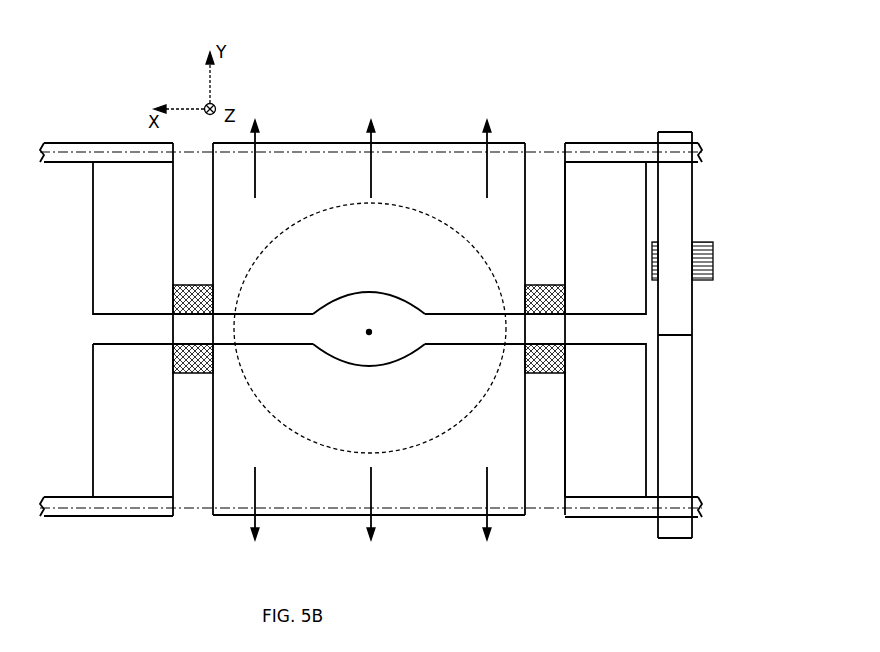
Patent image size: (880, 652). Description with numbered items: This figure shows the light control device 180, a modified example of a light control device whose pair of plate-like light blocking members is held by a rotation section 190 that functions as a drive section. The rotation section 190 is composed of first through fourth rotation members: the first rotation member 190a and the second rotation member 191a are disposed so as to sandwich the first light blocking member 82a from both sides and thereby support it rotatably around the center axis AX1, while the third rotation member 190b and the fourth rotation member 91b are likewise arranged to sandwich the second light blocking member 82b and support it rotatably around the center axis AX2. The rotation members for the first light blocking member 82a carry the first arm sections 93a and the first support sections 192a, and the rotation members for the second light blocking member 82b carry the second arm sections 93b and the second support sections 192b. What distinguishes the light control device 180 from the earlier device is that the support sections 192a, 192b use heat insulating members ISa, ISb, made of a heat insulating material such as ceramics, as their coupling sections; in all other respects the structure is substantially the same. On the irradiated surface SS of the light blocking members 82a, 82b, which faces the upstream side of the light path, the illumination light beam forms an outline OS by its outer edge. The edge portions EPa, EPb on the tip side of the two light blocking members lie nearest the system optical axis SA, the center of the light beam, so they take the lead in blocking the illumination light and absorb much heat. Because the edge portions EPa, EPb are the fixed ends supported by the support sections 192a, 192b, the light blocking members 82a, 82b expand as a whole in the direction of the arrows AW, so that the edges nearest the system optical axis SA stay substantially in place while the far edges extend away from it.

The first rotation member 190a is at (121, 133).
The third rotation member 190b is at (113, 527).
The rotation section 190 is at (562, 104).
The second rotation member 191a is at (591, 117).
The first support section 192a is at (187, 270).
The second support section 192b is at (187, 398).
The first arm section 93a is at (118, 242).
The second arm section 93b is at (118, 415).
The first light blocking member 82a is at (438, 168).
The second light blocking member 82b is at (447, 490).
The fourth rotation member 91b is at (599, 541).
The light control device 180 is at (667, 95).
The system optical axis SA is at (369, 330).
The outline OS is at (448, 227).
The irradiated surface SS is at (392, 220).
The arrows AW is at (258, 170).
The center axis AX1 is at (323, 148).
The center axis AX2 is at (513, 518).
The edge portion EPa is at (283, 316).
The edge portion EPb is at (447, 344).
The heat insulating member ISa is at (212, 312).
The heat insulating member ISb is at (182, 348).